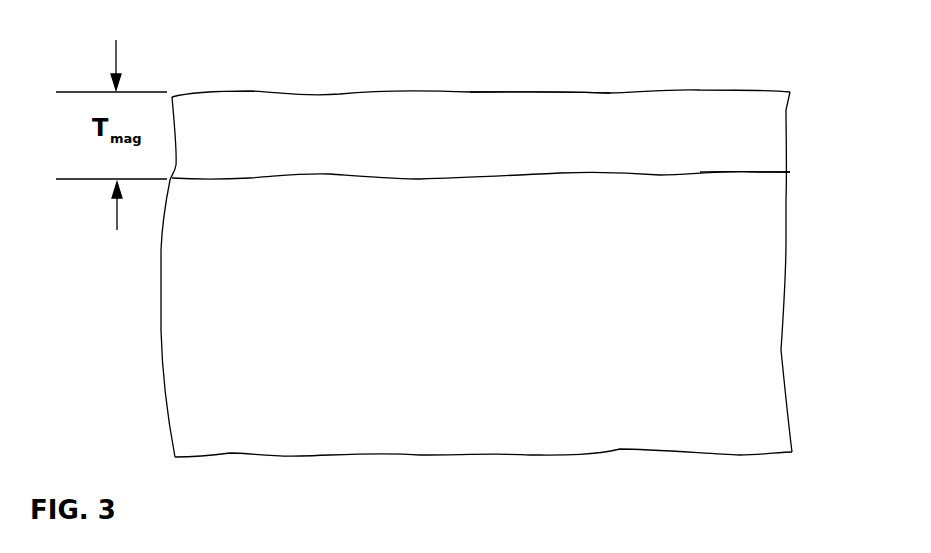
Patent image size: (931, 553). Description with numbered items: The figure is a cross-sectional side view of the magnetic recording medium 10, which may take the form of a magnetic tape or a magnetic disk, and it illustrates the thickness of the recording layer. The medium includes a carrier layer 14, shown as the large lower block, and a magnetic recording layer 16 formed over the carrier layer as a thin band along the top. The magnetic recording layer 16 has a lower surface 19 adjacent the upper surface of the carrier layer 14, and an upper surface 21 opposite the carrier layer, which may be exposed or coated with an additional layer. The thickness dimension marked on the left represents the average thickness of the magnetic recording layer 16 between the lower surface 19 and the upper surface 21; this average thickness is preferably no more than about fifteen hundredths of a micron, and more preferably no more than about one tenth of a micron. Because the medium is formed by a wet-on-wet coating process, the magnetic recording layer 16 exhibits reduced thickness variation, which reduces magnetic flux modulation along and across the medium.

The magnetic recording medium 10 is at (345, 78).
The carrier layer 14 is at (782, 350).
The magnetic recording layer 16 is at (791, 120).
The lower surface 19 is at (757, 174).
The upper surface 21 is at (520, 92).